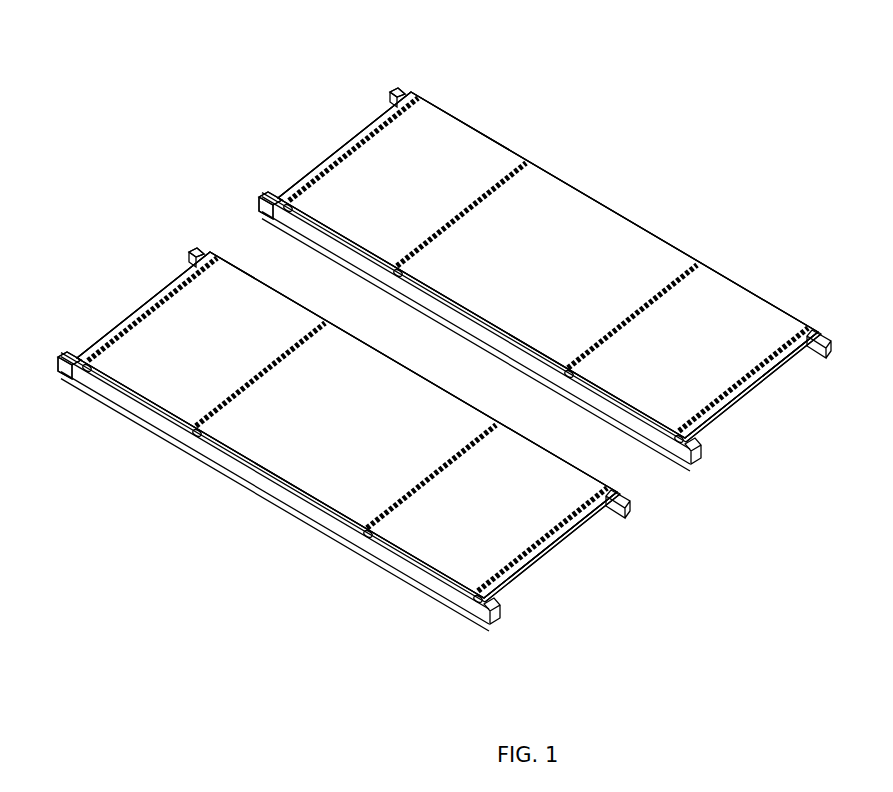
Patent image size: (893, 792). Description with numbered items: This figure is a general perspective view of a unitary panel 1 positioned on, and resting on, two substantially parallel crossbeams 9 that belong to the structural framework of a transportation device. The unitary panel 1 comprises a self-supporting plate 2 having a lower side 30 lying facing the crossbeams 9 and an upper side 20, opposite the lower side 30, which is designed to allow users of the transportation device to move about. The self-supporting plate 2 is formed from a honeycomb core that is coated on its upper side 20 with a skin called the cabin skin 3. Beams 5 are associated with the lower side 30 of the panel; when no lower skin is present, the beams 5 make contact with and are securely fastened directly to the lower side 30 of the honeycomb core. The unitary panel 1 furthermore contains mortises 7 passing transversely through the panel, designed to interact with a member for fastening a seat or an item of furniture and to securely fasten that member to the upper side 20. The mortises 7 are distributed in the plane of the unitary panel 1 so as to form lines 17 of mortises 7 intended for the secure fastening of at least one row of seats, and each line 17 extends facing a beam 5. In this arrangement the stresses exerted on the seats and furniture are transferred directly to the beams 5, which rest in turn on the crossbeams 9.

The unitary panel 1 is at (665, 126).
The self-supporting plate 2 is at (450, 308).
The cabin skin 3 is at (692, 322).
The beam 5 is at (284, 214).
The mortise 7 is at (368, 127).
The crossbeam 9 is at (398, 102).
The line of mortises 17 is at (417, 96).
The upper side 20 is at (558, 229).
The lower side 30 is at (583, 531).